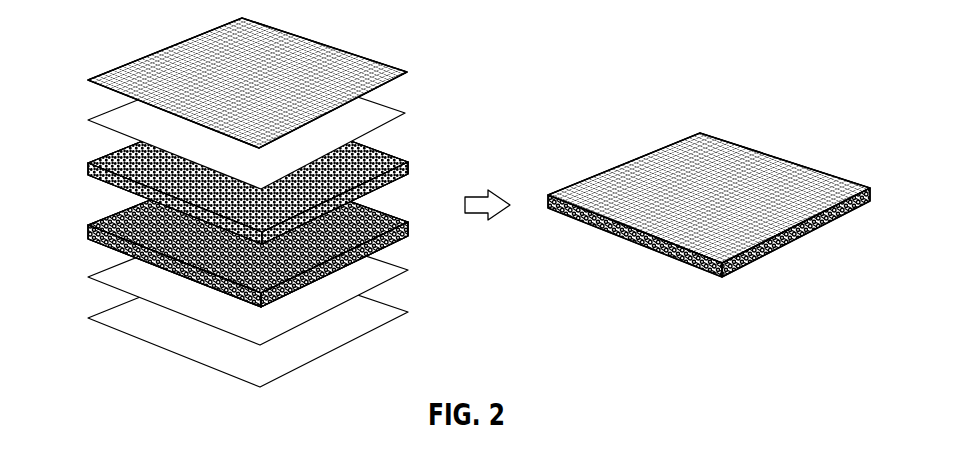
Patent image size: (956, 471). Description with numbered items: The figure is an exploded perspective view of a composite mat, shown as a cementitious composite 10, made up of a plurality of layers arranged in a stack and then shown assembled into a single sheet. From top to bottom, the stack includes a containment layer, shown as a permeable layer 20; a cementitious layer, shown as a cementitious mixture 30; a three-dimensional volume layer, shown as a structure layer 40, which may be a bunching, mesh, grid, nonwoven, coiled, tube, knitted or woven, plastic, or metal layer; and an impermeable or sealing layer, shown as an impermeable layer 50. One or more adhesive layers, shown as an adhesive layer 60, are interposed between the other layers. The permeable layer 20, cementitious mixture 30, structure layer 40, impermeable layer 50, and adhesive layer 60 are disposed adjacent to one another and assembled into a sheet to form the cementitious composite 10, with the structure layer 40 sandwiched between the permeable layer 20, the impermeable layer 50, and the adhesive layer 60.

The cementitious composite 10 is at (781, 108).
The permeable layer 20 is at (107, 72).
The cementitious mixture 30 is at (108, 163).
The structure layer 40 is at (108, 226).
The impermeable layer 50 is at (108, 318).
The adhesive layer 60 is at (108, 278).